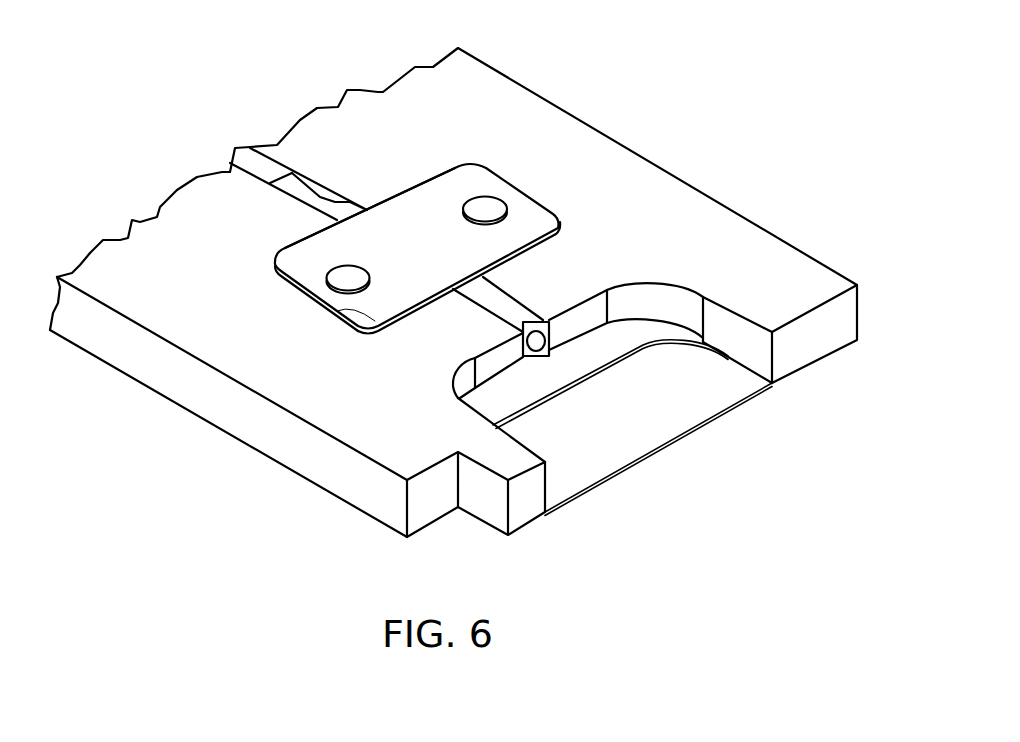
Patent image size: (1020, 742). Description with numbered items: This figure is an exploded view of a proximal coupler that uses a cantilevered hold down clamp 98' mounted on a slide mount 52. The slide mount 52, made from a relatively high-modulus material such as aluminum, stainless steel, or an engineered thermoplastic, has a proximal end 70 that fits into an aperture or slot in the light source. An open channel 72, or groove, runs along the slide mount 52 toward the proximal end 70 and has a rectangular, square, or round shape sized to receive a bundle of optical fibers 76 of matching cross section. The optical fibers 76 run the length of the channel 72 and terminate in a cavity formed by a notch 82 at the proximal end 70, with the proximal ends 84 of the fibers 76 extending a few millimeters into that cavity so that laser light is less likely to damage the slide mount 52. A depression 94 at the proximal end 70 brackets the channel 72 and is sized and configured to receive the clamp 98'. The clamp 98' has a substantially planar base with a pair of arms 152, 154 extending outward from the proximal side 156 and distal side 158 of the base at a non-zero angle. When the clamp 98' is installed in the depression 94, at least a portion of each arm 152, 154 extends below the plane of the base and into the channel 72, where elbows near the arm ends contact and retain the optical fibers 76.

The slide mount 52 is at (786, 268).
The proximal end of the slide mount 70 is at (817, 340).
The open channel 72 is at (515, 308).
The bundle of optical fibers 76 is at (243, 160).
The notch 82 is at (652, 303).
The proximal ends of the fibers 84 is at (545, 345).
The depression 94 is at (338, 311).
The proximal hold down clamp 98' is at (426, 171).
The arm 152 is at (493, 303).
The arm 154 is at (337, 205).
The proximal side of the base 156 is at (403, 323).
The distal side of the base 158 is at (292, 244).